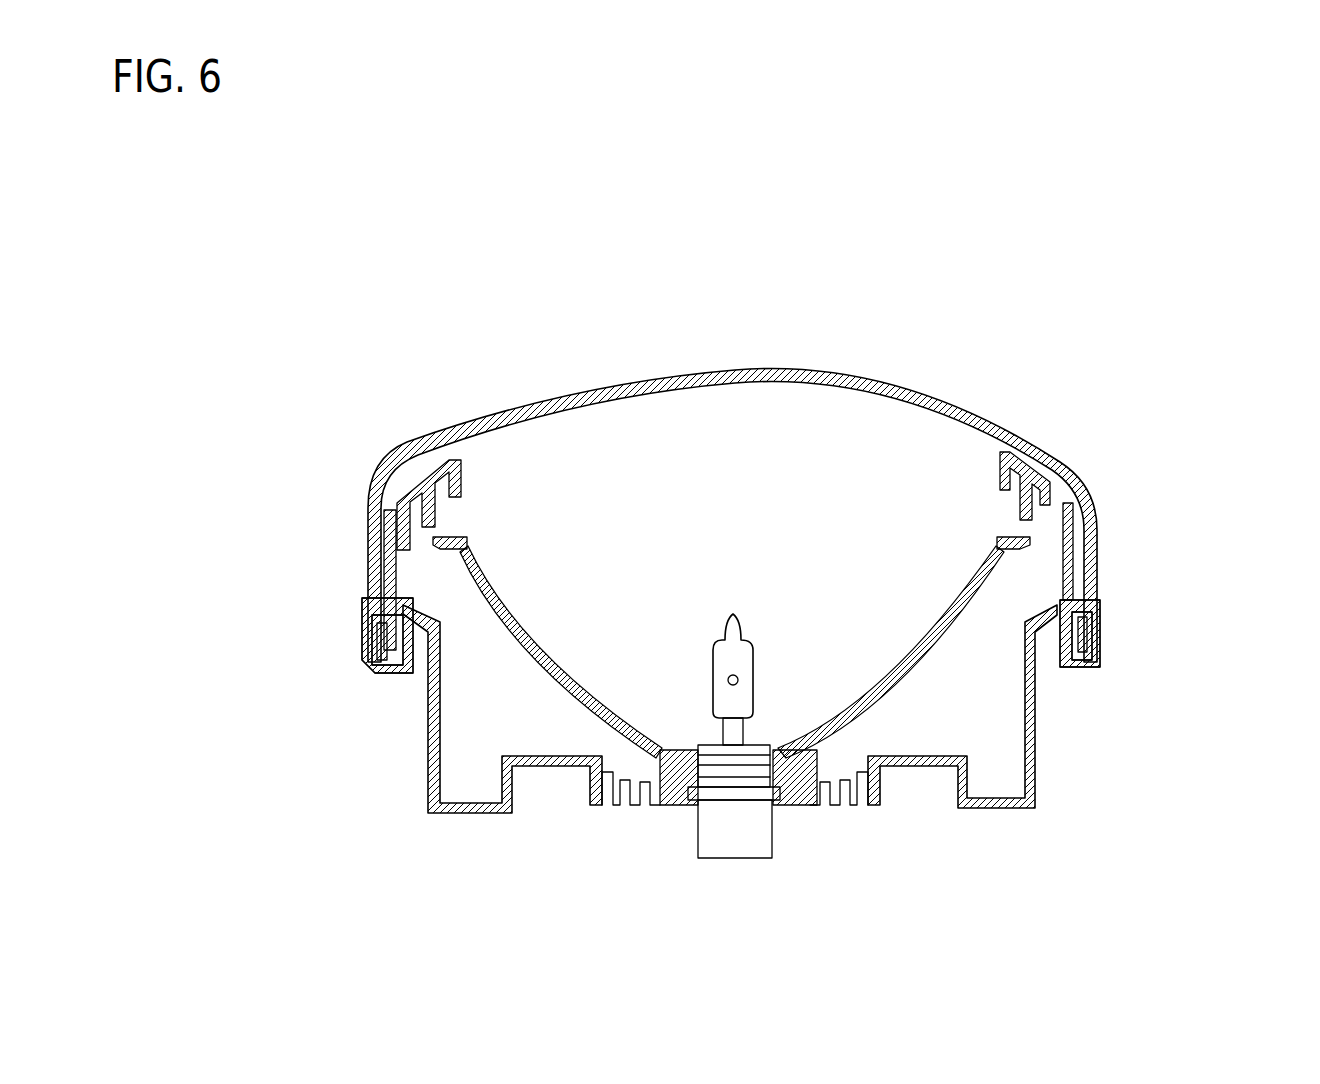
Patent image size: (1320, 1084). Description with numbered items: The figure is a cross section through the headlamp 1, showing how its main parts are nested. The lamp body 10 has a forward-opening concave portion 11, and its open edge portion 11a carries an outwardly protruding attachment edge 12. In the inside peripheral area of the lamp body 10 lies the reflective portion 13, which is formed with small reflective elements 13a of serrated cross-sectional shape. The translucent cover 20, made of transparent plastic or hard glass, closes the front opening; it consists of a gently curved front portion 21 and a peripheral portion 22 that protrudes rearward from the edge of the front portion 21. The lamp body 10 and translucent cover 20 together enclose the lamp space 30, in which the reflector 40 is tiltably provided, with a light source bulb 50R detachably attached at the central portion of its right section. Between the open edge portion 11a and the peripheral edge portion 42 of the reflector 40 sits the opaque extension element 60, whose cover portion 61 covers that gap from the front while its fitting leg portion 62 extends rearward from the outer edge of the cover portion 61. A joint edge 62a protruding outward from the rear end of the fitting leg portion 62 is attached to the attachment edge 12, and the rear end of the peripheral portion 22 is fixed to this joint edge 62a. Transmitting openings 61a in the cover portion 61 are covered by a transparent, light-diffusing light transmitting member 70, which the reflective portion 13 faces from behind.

The headlamp 1 is at (826, 288).
The lamp body 10 is at (1067, 672).
The concave portion 11 is at (933, 715).
The open edge portion 11a is at (1097, 667).
The attachment edge 12 is at (396, 675).
The reflective portion 13 is at (423, 608).
The reflective element 13a is at (1020, 597).
The translucent cover 20 is at (745, 368).
The front portion 21 is at (600, 388).
The peripheral portion 22 is at (370, 523).
The lamp space 30 is at (1090, 515).
The reflector 40 is at (888, 678).
The peripheral edge portion 42 is at (447, 537).
The light source bulb 50R is at (751, 633).
The extension element 60 is at (366, 521).
The cover portion 61 is at (438, 478).
The transmitting opening 61a is at (1063, 497).
The fitting leg portion 62 is at (370, 553).
The joint edge 62a is at (364, 570).
The light transmitting member 70 is at (406, 520).